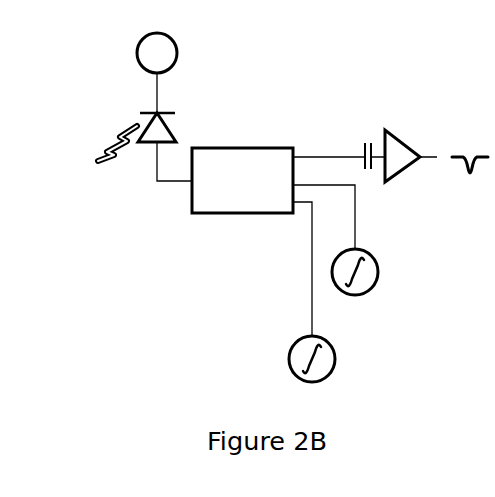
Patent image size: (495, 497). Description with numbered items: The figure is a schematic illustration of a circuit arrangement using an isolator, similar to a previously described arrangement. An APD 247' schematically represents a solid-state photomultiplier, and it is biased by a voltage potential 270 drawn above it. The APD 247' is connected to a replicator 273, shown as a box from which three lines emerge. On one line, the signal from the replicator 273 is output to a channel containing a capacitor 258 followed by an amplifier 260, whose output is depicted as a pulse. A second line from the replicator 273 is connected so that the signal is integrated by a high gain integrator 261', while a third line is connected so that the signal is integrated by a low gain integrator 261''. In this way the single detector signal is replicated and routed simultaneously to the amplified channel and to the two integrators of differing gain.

The voltage potential 270 is at (139, 46).
The APD 247' is at (122, 125).
The replicator 273 is at (242, 180).
The capacitor 258 is at (365, 140).
The amplifier 260 is at (398, 145).
The high gain integrator 261' is at (392, 291).
The low gain integrator 261'' is at (354, 378).